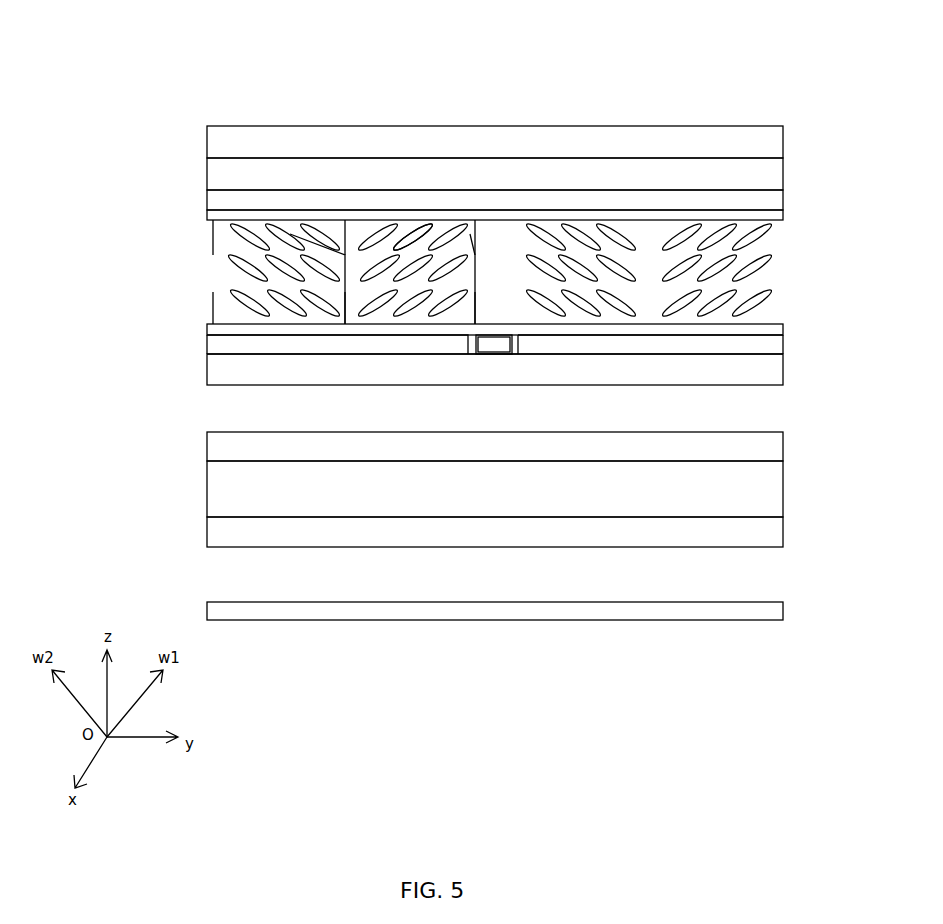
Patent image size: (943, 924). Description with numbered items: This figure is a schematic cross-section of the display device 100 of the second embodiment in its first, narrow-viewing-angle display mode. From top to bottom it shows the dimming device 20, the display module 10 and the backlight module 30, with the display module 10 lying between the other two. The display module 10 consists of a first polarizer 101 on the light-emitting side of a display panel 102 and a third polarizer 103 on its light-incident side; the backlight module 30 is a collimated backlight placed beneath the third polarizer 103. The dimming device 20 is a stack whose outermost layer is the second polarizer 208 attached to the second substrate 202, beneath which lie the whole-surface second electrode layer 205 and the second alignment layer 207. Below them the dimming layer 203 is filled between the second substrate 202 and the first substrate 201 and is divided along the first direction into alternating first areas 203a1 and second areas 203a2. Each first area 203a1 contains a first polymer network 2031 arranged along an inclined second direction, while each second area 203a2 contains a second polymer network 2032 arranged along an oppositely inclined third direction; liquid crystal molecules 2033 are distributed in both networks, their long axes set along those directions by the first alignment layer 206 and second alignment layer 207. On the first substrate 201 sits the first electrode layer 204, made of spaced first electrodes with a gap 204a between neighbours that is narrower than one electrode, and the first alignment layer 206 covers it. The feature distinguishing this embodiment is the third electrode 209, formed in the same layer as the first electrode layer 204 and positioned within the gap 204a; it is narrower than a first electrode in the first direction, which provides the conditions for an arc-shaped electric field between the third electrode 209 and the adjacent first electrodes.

The display device 100 is at (508, 70).
The dimming device 20 is at (202, 128).
The second polarizer 208 is at (760, 136).
The second substrate 202 is at (760, 167).
The second electrode layer 205 is at (762, 195).
The second alignment layer 207 is at (762, 217).
The dimming layer 203 is at (524, 212).
The second polymer network 2032 is at (244, 232).
The second area 203a2 is at (268, 232).
The liquid crystal molecules 2033 is at (332, 232).
The first polymer network 2031 is at (406, 232).
The first area 203a1 is at (464, 232).
The third electrode 209 is at (500, 338).
The first alignment layer 206 is at (760, 327).
The first electrode layer 204 is at (762, 349).
The gap 204a is at (512, 337).
The first substrate 201 is at (760, 371).
The display module 10 is at (200, 432).
The first polarizer 101 is at (760, 443).
The display panel 102 is at (760, 488).
The third polarizer 103 is at (760, 532).
The backlight module 30 is at (207, 607).